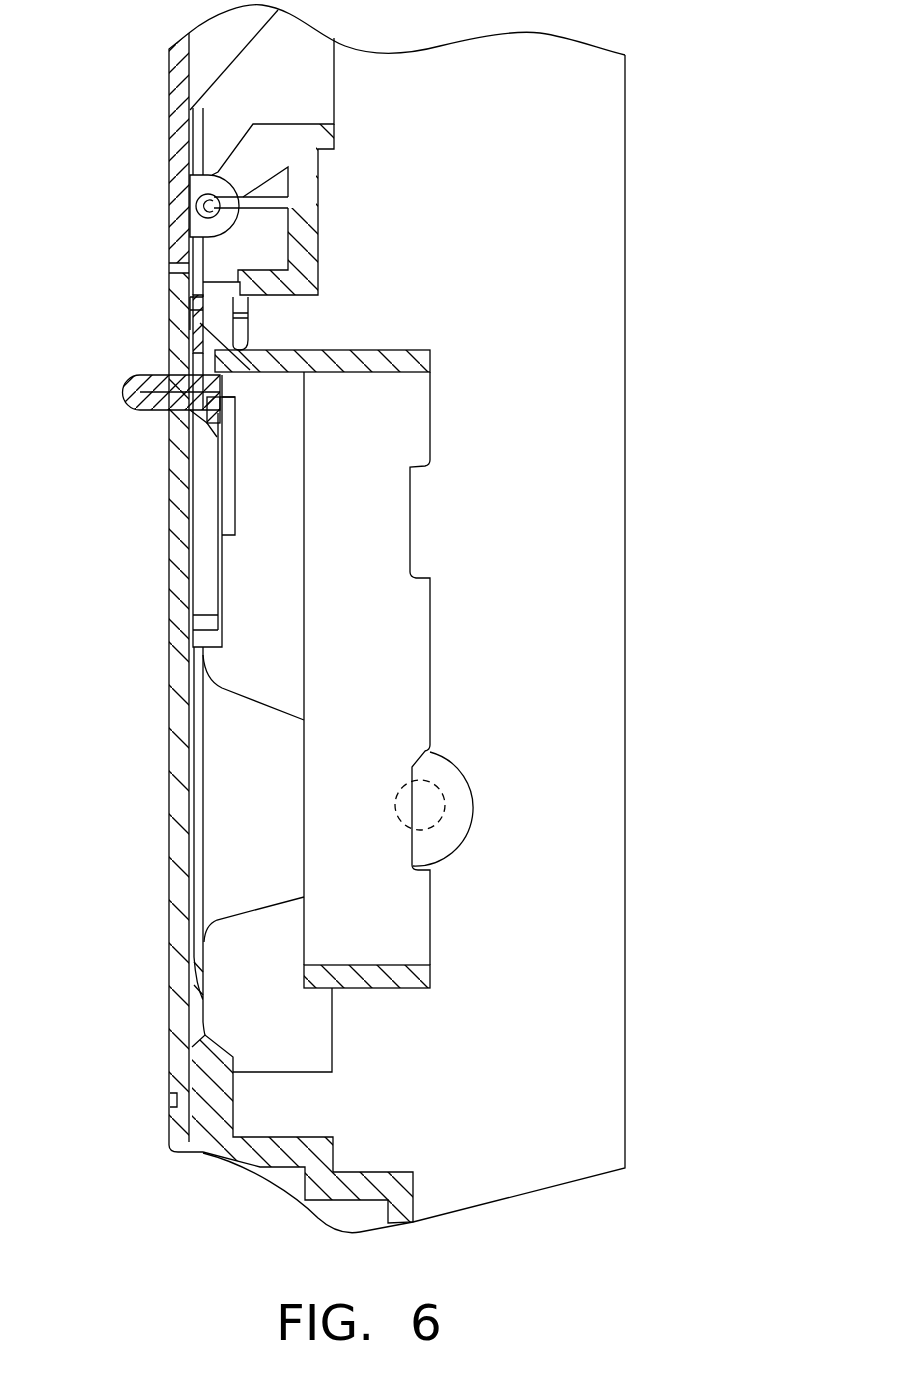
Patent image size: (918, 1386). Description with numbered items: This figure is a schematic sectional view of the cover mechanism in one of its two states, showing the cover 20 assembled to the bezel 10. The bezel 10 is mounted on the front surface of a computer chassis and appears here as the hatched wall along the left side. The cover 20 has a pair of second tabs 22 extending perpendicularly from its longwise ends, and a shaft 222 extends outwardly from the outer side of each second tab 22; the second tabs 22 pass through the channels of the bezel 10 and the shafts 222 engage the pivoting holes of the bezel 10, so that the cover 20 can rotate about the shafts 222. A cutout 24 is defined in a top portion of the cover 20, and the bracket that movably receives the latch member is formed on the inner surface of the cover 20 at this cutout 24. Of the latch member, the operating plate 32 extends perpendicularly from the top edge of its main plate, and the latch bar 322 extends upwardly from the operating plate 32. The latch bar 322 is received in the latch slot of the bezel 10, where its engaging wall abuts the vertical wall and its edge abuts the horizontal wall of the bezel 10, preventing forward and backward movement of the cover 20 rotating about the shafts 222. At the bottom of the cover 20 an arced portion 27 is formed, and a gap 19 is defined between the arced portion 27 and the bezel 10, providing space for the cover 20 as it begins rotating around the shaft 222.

The bezel 10 is at (177, 308).
The cover 20 is at (183, 540).
The second tabs 22 is at (270, 745).
The shaft 222 is at (427, 807).
The cutout 24 is at (170, 422).
The arced portion 27 is at (190, 983).
The gap 19 is at (185, 1020).
The operating plate 32 is at (123, 397).
The latch bar 322 is at (172, 365).